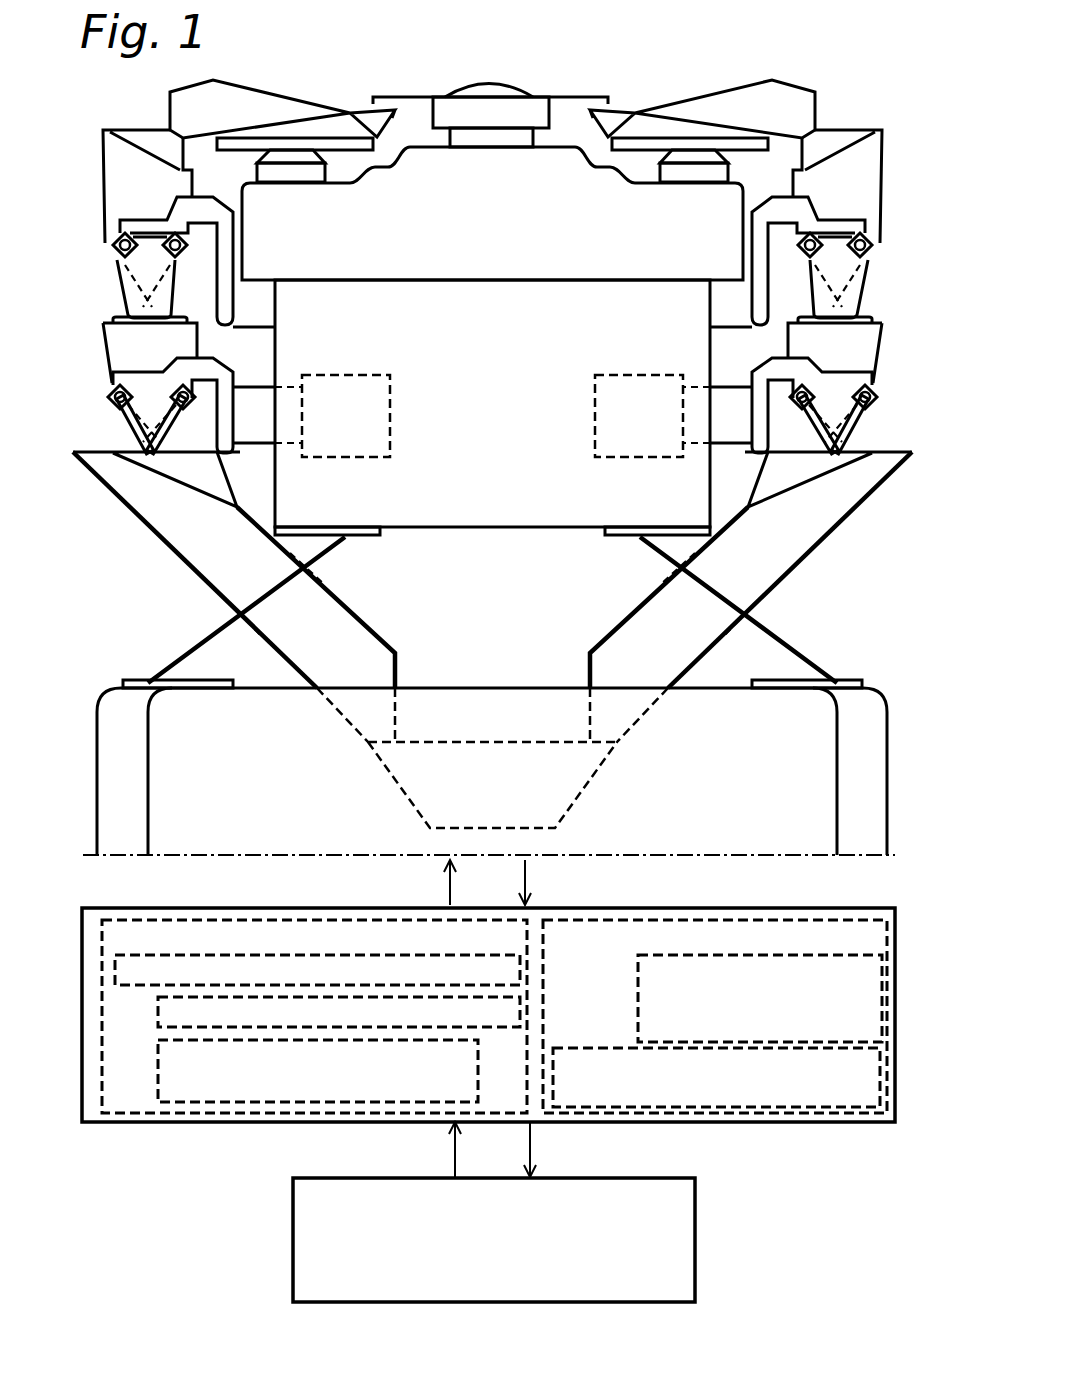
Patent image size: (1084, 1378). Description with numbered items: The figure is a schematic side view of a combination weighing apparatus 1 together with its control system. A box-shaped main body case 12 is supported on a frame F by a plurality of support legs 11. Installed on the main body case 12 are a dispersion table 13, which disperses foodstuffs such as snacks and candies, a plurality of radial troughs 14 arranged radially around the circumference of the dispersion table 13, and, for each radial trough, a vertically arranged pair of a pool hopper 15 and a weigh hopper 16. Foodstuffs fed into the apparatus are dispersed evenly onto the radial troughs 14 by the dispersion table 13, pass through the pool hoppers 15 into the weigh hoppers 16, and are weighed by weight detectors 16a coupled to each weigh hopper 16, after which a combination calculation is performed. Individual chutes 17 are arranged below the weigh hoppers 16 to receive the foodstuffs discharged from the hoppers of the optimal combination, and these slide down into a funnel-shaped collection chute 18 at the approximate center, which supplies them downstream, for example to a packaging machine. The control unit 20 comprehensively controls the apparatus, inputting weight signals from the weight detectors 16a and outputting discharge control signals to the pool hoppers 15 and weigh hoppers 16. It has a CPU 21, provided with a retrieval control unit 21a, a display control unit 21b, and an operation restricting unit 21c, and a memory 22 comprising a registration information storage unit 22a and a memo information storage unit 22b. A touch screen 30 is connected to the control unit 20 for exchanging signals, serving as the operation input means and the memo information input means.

The combination weighing apparatus 1 is at (900, 96).
The support legs 11 is at (190, 648).
The main body case 12 is at (510, 530).
The dispersion table 13 is at (537, 93).
The radial troughs 14 is at (185, 118).
The pool hoppers 15 is at (118, 172).
The weigh hoppers 16 is at (118, 350).
The weight detectors 16a is at (376, 413).
The individual chutes 17 is at (152, 523).
The collection chute 18 is at (568, 780).
The control unit 20 is at (770, 1128).
The CPU 21 is at (380, 917).
The retrieval control unit 21a is at (175, 955).
The display control unit 21b is at (158, 1025).
The operation restricting unit 21c is at (158, 1097).
The memory 22 is at (778, 920).
The registration information storage unit 22a is at (738, 1000).
The memo information storage unit 22b is at (716, 1065).
The touch screen 30 is at (700, 1220).
The frame F is at (902, 770).